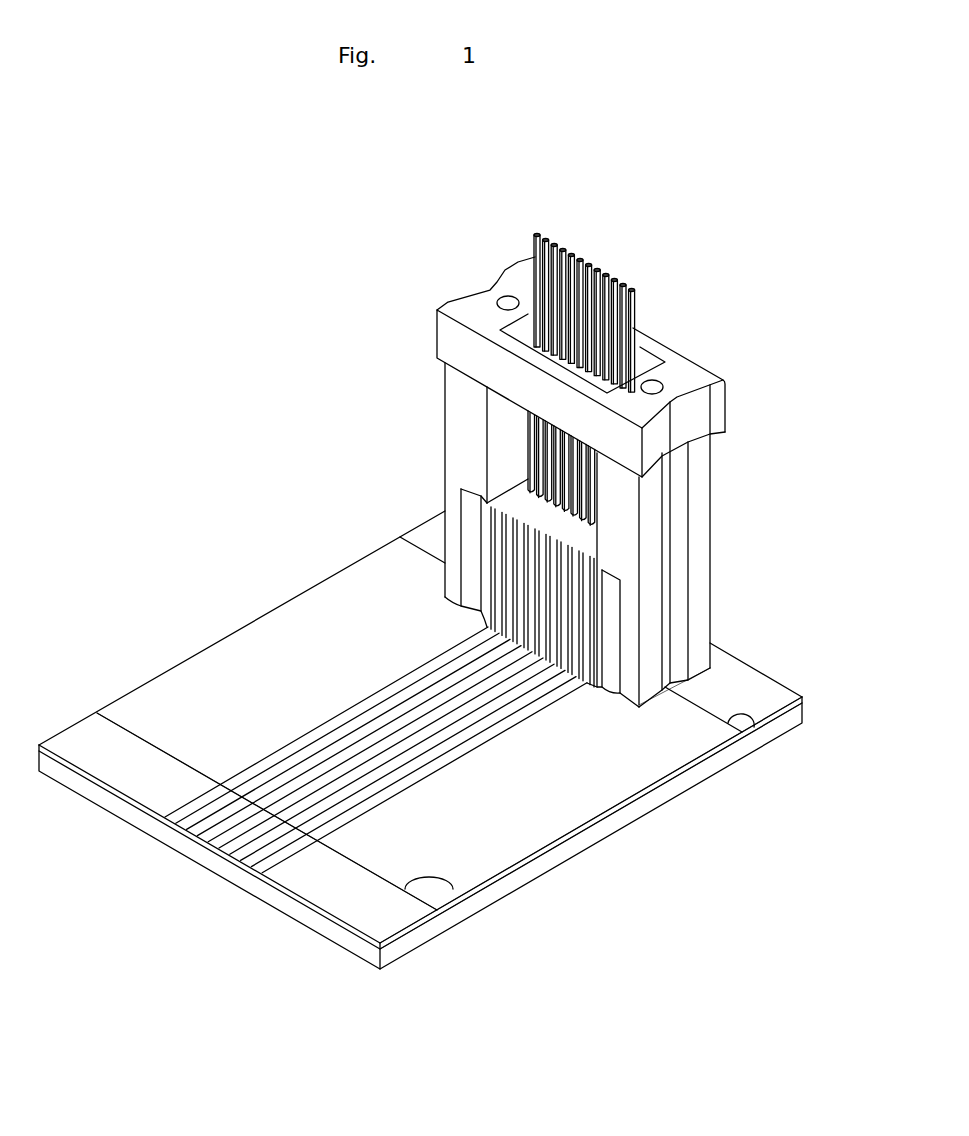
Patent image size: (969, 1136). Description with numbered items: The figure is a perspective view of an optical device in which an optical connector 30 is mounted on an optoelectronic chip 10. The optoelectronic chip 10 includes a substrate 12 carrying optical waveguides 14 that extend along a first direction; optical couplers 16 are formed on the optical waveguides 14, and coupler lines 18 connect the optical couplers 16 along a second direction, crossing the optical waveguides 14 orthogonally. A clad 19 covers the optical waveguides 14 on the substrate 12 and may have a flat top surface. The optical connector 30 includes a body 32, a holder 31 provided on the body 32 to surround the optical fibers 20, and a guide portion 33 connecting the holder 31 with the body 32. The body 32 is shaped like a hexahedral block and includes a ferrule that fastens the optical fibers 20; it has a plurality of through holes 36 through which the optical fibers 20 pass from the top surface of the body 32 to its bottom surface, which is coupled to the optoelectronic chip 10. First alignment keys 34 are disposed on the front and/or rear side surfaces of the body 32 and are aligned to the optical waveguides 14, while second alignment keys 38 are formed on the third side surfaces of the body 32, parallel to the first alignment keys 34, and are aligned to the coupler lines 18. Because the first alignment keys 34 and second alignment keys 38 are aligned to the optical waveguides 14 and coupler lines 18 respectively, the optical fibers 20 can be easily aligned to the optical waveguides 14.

The optoelectronic chip 10 is at (441, 740).
The substrate 12 is at (597, 828).
The optical waveguides 14 is at (423, 773).
The optical couplers 16 is at (317, 838).
The coupler lines 18 is at (707, 879).
The clad 19 is at (640, 797).
The optical fibers 20 is at (585, 258).
The optical connector 30 is at (643, 482).
The holder 31 is at (717, 410).
The body 32 is at (703, 610).
The guide portion 33 is at (703, 465).
The first alignment keys 34 is at (583, 550).
The through holes 36 is at (597, 523).
The second alignment keys 38 is at (668, 580).